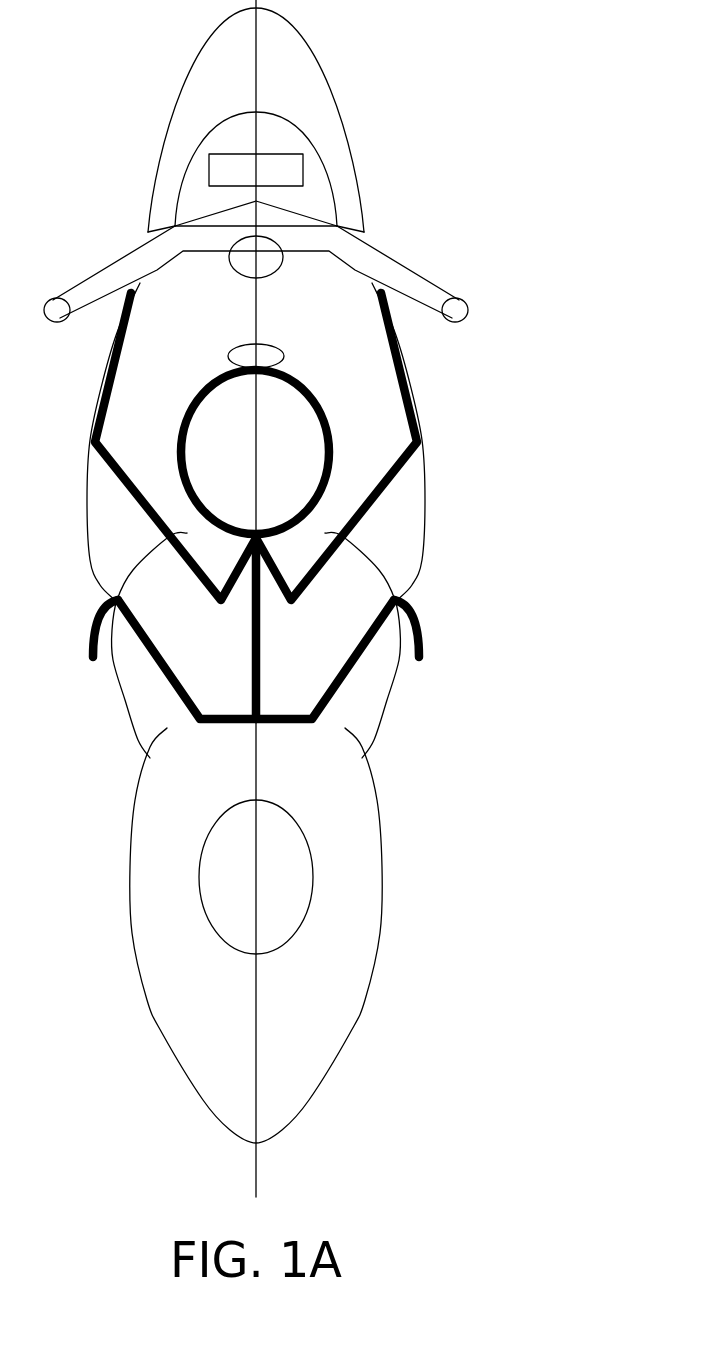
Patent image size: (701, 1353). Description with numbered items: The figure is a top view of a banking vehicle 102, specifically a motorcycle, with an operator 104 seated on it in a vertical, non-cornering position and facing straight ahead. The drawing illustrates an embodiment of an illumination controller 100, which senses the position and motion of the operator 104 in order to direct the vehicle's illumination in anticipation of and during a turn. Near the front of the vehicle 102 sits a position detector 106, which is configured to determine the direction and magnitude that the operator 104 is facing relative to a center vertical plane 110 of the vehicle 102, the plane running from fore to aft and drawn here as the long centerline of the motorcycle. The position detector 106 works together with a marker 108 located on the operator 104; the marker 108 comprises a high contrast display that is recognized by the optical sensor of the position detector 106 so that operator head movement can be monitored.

The illumination controller 100 is at (430, 150).
The banking vehicle 102 is at (362, 1013).
The operator 104 is at (412, 456).
The position detector 106 is at (303, 170).
The marker 108 is at (283, 354).
The center vertical plane 110 is at (258, 1162).